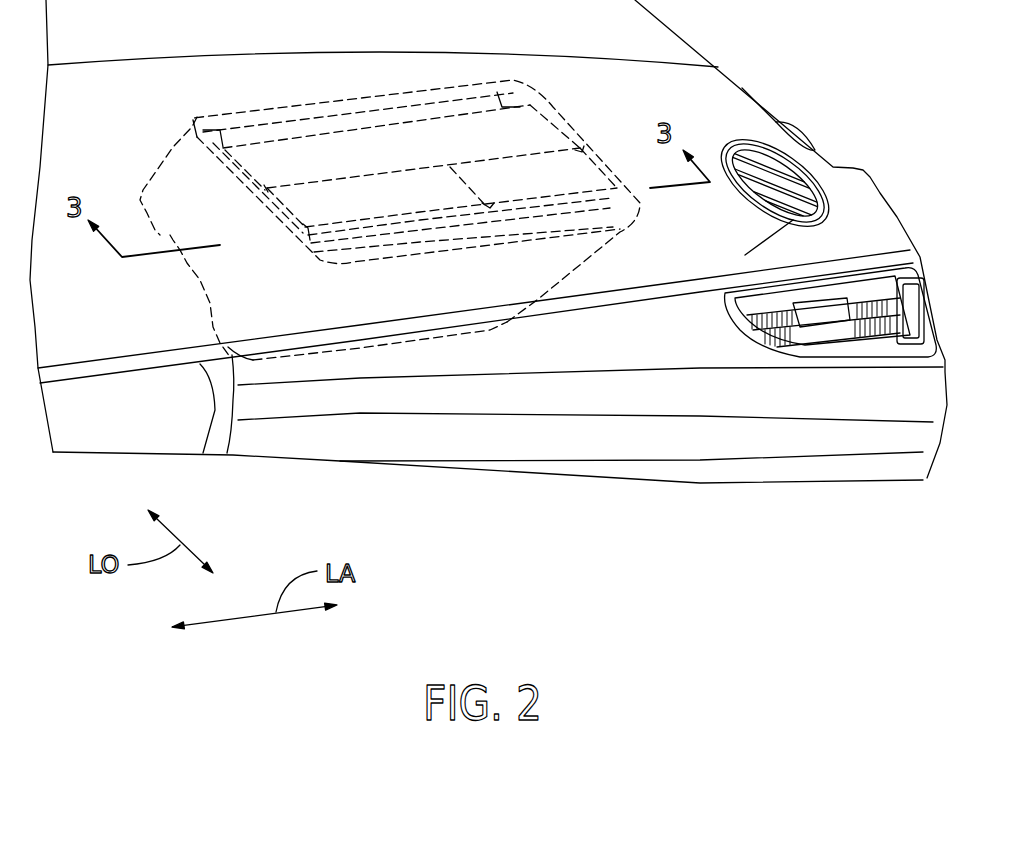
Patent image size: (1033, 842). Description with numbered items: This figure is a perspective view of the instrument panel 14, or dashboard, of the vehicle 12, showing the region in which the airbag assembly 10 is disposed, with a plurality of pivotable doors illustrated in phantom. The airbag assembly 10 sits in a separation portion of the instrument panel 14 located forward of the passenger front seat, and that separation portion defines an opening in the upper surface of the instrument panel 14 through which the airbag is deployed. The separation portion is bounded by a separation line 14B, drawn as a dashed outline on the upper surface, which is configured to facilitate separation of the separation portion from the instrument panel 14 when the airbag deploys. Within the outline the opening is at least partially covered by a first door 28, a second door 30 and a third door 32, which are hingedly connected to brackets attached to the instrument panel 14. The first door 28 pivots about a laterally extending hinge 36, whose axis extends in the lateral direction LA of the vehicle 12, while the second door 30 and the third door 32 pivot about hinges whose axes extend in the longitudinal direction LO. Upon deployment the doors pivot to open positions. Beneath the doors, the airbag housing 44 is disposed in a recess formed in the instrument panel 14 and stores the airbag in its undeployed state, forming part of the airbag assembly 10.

The airbag assembly 10 is at (155, 302).
The vehicle 12 is at (838, 94).
The instrument panel 14 is at (828, 208).
The separation line 14B is at (270, 108).
The first door 28 is at (413, 145).
The second door 30 is at (387, 197).
The third door 32 is at (527, 177).
The laterally extending hinge 36 is at (347, 120).
The airbag housing 44 is at (412, 342).